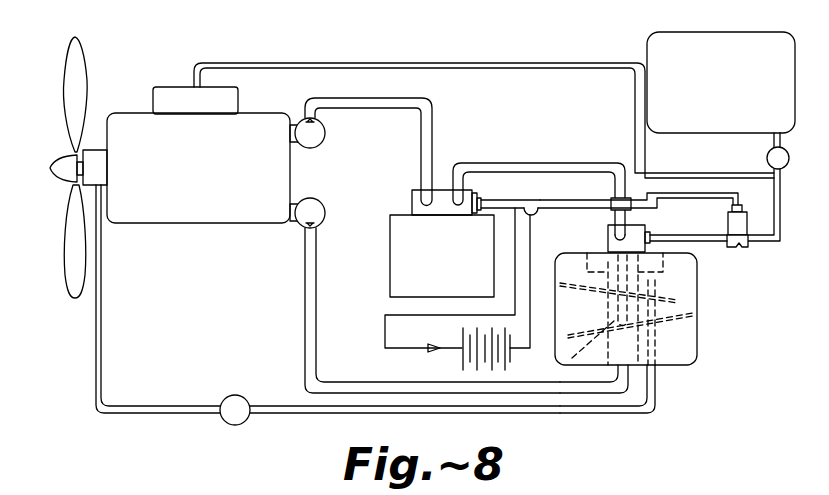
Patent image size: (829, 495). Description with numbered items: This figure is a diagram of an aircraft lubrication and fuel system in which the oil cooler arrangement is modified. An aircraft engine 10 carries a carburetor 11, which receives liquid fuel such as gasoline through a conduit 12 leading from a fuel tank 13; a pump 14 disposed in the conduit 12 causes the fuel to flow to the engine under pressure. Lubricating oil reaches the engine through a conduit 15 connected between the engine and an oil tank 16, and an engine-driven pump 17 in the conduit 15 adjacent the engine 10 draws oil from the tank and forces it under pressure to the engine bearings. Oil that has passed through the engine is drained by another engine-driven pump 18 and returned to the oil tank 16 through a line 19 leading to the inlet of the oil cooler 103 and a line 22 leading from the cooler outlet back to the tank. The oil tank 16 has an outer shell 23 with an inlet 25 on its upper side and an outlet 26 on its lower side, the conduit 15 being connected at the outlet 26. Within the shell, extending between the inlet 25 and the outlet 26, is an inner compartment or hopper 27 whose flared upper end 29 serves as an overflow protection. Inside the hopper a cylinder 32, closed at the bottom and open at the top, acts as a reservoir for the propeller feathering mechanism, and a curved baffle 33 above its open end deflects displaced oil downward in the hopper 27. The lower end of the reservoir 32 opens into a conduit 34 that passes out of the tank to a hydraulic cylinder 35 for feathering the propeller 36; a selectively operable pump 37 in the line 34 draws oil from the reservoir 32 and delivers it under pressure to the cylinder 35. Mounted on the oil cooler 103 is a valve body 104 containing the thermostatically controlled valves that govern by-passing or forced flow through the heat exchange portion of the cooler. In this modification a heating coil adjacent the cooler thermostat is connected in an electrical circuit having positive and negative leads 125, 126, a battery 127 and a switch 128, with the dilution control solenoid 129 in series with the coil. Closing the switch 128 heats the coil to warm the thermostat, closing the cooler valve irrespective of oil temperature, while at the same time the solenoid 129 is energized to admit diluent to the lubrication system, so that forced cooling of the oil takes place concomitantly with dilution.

The aircraft engine 10 is at (166, 210).
The carburetor 11 is at (175, 86).
The conduit 12 is at (314, 62).
The fuel tank 13 is at (710, 42).
The pump 14 is at (767, 158).
The conduit 15 is at (305, 311).
The oil tank 16 is at (684, 355).
The engine driven pump 17 is at (326, 214).
The engine driven pump 18 is at (326, 136).
The line 19 is at (428, 127).
The line 22 is at (537, 163).
The outer shell 23 is at (607, 262).
The inlet 25 is at (575, 256).
The outlet 26 is at (616, 371).
The hopper 27 is at (628, 352).
The flared upper end 29 is at (656, 261).
The cylinder 32 is at (570, 358).
The curved baffle 33 is at (693, 326).
The conduit 34 is at (598, 415).
The hydraulic cylinder 35 is at (93, 148).
The propeller 36 is at (69, 277).
The selectively operable pump 37 is at (222, 420).
The oil cooler 103 is at (390, 263).
The valve body 104 is at (412, 205).
The positive lead 125 is at (545, 206).
The negative lead 126 is at (531, 200).
The battery 127 is at (478, 370).
The switch 128 is at (432, 350).
The dilution control solenoid 129 is at (732, 214).